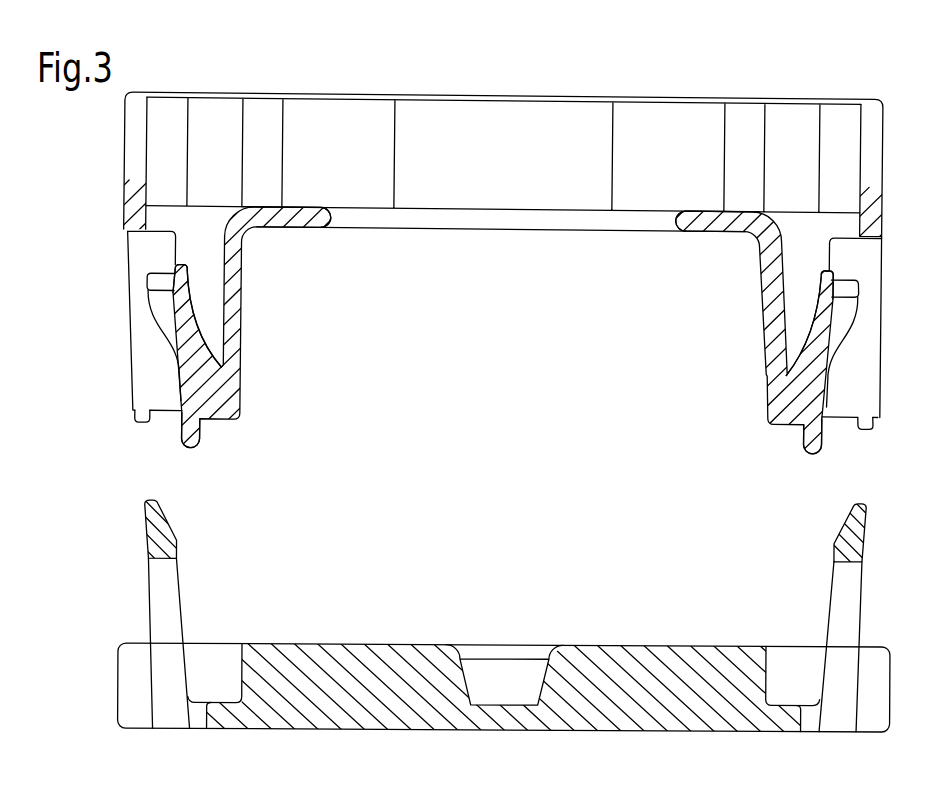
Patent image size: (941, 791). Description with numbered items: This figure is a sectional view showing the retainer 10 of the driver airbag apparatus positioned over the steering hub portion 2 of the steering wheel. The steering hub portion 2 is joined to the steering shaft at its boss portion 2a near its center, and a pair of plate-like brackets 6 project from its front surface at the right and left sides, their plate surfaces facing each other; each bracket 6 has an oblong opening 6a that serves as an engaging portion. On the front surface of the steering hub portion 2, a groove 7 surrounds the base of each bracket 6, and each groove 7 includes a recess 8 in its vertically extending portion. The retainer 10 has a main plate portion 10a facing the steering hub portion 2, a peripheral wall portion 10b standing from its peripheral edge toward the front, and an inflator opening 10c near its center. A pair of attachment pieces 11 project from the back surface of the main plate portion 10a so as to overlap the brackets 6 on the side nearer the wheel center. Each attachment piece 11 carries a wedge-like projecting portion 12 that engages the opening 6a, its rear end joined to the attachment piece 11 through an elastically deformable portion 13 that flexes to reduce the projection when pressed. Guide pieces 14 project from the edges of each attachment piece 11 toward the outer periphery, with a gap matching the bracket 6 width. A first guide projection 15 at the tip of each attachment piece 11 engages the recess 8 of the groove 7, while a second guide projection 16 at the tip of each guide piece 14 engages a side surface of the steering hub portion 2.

The steering hub portion 2 is at (498, 671).
The boss portion 2a is at (540, 675).
The bracket 6 is at (505, 611).
The opening 6a is at (155, 602).
The groove 7 is at (240, 672).
The recess 8 is at (197, 718).
The retainer 10 is at (501, 261).
The main plate portion 10a is at (297, 204).
The peripheral wall portion 10b is at (305, 116).
The inflator opening 10c is at (349, 223).
The attachment piece 11 is at (245, 327).
The projecting portion 12 is at (154, 283).
The elastically deformable portion 13 is at (209, 330).
The guide piece 14 is at (501, 335).
The first guide projection 15 is at (206, 436).
The second guide projection 16 is at (137, 425).